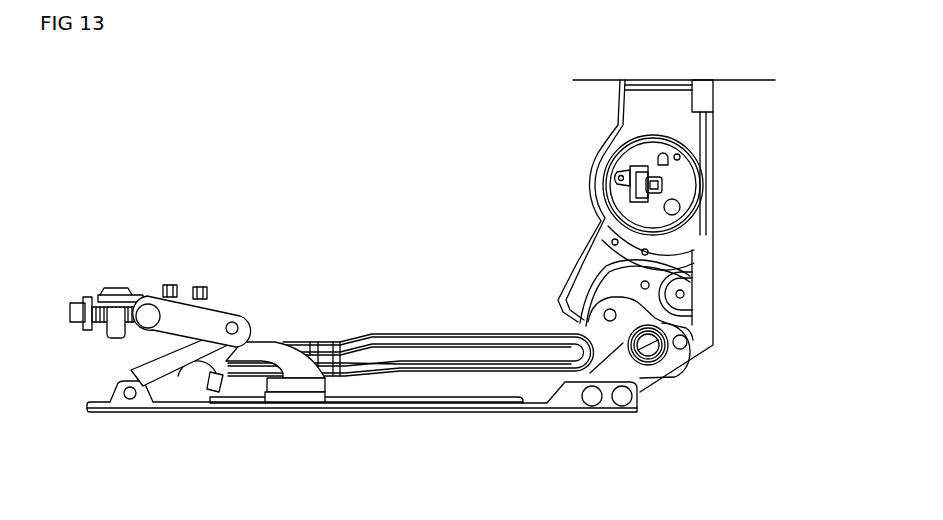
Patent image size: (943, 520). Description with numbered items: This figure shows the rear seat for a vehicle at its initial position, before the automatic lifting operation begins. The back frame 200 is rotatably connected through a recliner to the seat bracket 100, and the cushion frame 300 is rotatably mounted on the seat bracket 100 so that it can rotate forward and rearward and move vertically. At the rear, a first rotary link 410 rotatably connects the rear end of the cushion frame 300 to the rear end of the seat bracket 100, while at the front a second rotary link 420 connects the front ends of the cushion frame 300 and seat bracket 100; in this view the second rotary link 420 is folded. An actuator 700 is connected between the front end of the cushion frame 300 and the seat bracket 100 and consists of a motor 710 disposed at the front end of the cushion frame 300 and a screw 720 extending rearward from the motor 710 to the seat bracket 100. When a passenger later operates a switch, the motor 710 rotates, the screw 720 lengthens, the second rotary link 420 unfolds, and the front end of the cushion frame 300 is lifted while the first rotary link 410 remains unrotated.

The seat bracket 100 is at (443, 402).
The back frame 200 is at (693, 137).
The cushion frame 300 is at (421, 356).
The first rotary link 410 is at (650, 378).
The second rotary link 420 is at (197, 351).
The actuator 700 is at (228, 391).
The motor 710 is at (192, 382).
The screw 720 is at (273, 354).